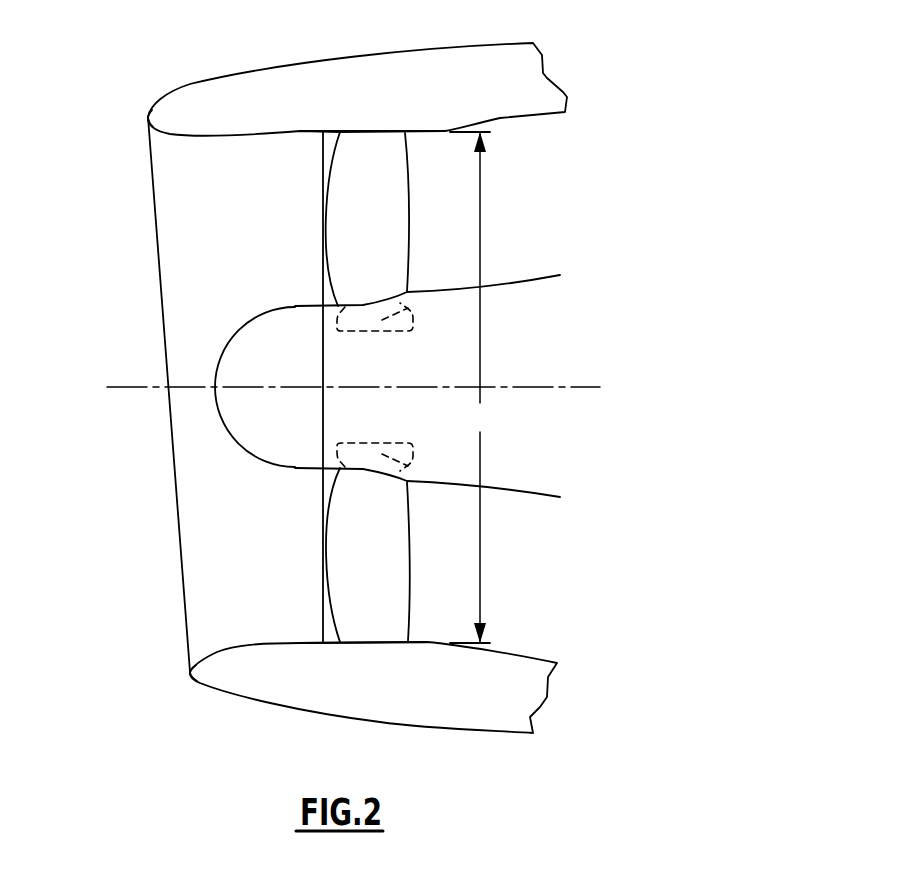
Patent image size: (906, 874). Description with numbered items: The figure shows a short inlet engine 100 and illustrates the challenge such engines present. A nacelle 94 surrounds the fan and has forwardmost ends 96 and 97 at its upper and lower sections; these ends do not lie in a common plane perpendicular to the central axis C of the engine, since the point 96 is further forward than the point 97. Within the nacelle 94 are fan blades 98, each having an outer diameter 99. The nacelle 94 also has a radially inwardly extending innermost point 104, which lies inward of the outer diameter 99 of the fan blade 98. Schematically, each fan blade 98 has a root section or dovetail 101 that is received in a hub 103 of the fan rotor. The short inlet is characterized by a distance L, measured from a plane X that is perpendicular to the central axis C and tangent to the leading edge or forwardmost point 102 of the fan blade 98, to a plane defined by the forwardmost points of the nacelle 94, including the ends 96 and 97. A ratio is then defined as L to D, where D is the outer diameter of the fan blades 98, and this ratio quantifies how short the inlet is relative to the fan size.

The nacelle 94 is at (185, 107).
The forwardmost end 96 is at (147, 118).
The forwardmost end 97 is at (188, 676).
The fan blade 98 is at (370, 218).
The outer diameter 99 is at (377, 132).
The vane assembly 100 is at (148, 427).
The root section or dovetail 101 is at (420, 292).
The leading edge or forwardmost point 102 is at (322, 240).
The hub 103 is at (343, 363).
The innermost point 104 is at (267, 643).
The distance L is at (200, 387).
The central axis C is at (512, 386).
The outer diameter of the fan blades D is at (470, 387).
The plane X is at (322, 495).